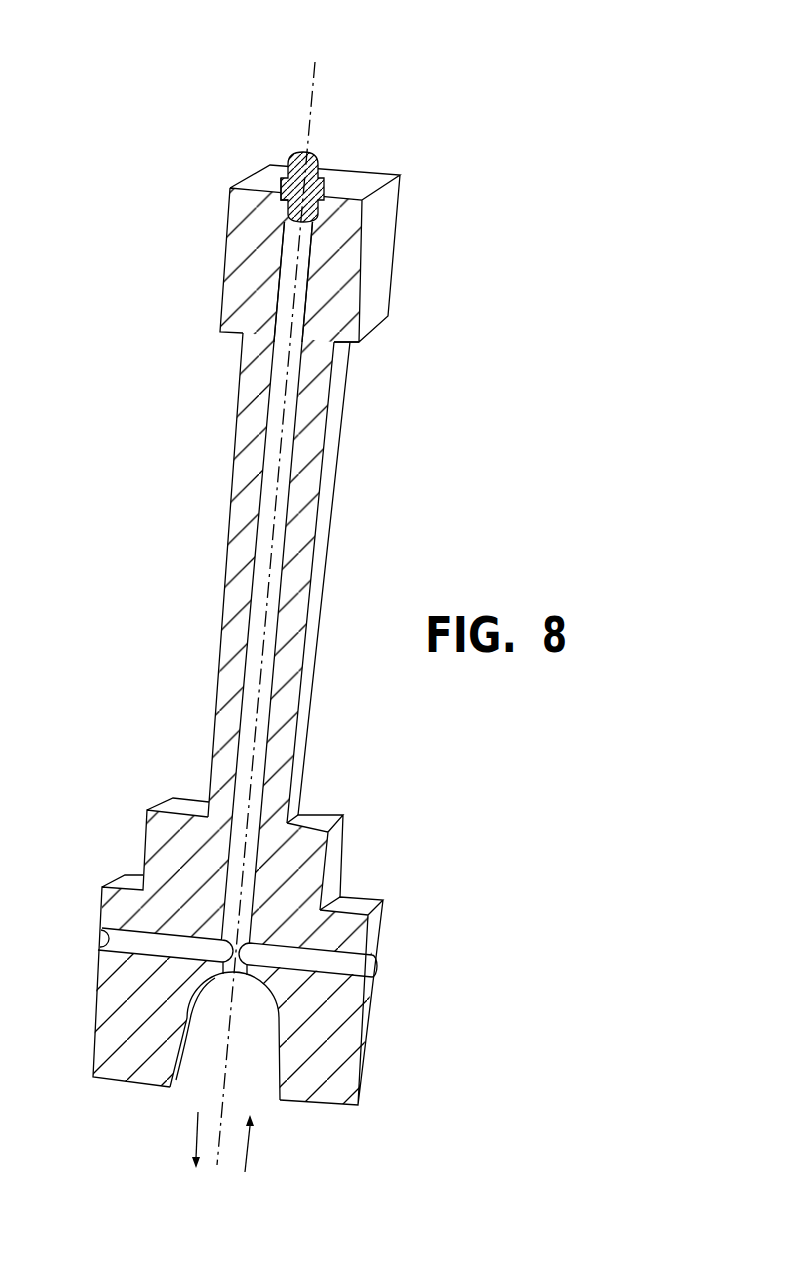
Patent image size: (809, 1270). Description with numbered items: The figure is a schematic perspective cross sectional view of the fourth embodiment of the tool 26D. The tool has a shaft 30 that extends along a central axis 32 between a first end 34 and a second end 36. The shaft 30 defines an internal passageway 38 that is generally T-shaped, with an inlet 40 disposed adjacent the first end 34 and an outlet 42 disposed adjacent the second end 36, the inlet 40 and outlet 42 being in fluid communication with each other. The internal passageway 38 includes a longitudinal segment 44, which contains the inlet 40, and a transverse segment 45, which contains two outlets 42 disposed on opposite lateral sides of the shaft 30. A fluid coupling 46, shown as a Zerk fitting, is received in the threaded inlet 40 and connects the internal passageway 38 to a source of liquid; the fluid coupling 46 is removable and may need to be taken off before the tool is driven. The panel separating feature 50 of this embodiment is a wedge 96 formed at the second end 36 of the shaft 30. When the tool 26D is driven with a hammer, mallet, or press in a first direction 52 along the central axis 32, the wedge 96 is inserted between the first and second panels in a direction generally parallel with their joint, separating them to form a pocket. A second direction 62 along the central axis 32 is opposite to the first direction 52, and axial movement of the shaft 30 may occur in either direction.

The fourth embodiment of the tool 26D is at (270, 614).
The shaft 30 is at (338, 427).
The central axis 32 is at (322, 90).
The first end 34 is at (363, 182).
The second end 36 is at (297, 817).
The internal passageway 38 is at (305, 273).
The inlet 40 is at (286, 198).
The outlet 42 is at (372, 958).
The longitudinal segment 44 is at (281, 508).
The transverse segment 45 is at (326, 947).
The fluid coupling 46 is at (320, 160).
The panel separating feature 50 is at (374, 1033).
The first direction 52 is at (198, 1122).
The second direction 62 is at (247, 1162).
The wedge 96 is at (320, 1065).